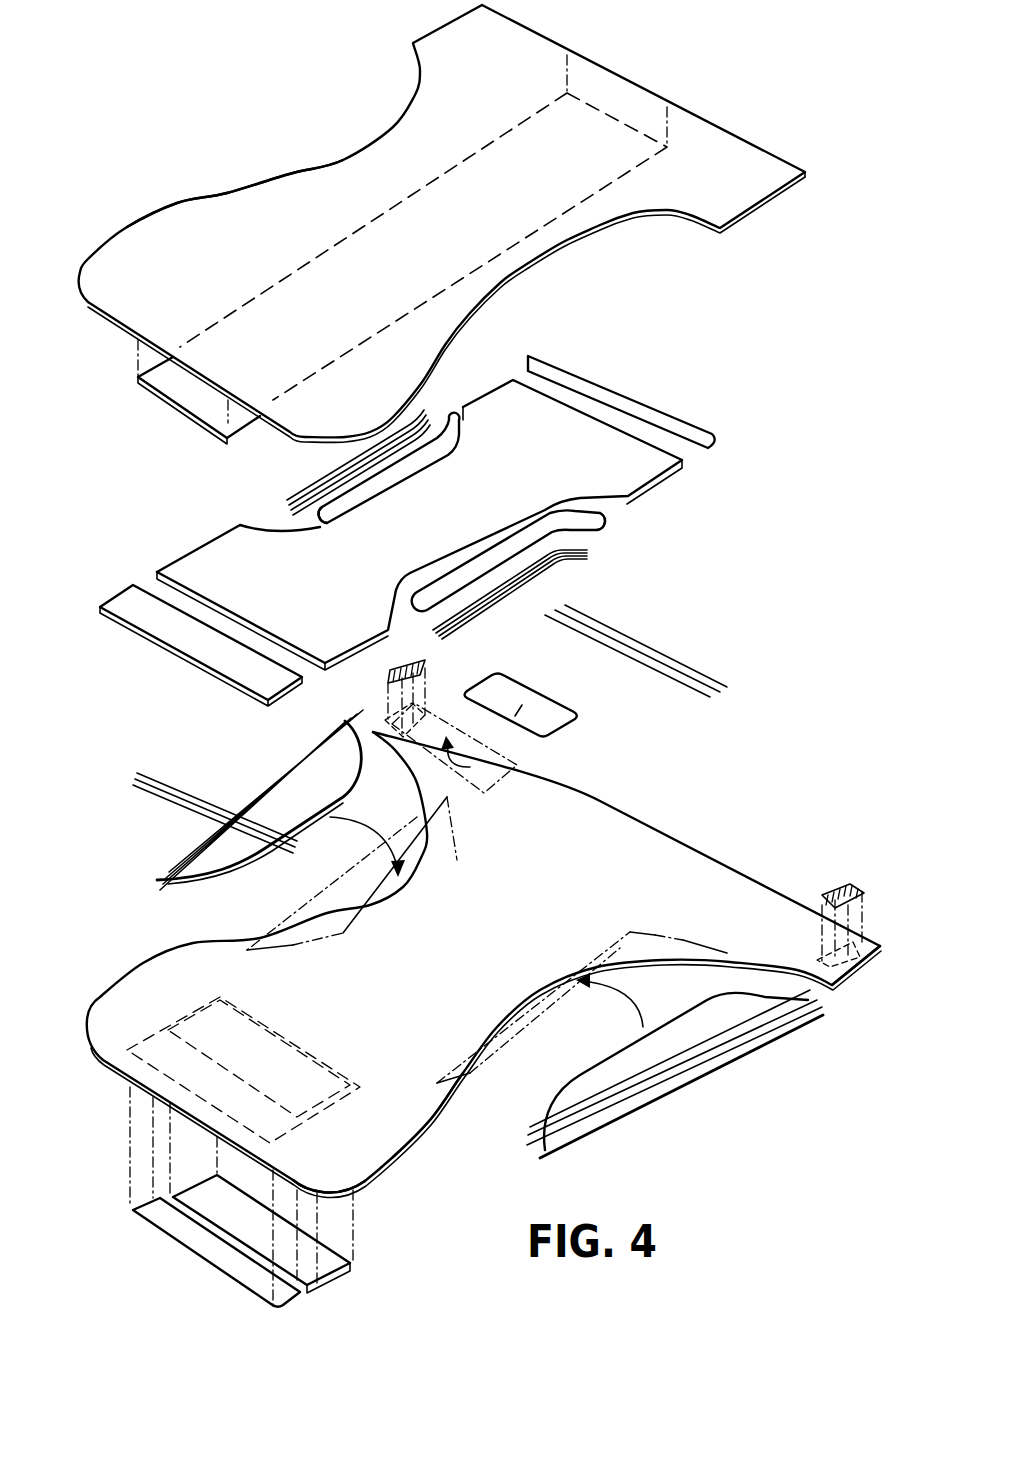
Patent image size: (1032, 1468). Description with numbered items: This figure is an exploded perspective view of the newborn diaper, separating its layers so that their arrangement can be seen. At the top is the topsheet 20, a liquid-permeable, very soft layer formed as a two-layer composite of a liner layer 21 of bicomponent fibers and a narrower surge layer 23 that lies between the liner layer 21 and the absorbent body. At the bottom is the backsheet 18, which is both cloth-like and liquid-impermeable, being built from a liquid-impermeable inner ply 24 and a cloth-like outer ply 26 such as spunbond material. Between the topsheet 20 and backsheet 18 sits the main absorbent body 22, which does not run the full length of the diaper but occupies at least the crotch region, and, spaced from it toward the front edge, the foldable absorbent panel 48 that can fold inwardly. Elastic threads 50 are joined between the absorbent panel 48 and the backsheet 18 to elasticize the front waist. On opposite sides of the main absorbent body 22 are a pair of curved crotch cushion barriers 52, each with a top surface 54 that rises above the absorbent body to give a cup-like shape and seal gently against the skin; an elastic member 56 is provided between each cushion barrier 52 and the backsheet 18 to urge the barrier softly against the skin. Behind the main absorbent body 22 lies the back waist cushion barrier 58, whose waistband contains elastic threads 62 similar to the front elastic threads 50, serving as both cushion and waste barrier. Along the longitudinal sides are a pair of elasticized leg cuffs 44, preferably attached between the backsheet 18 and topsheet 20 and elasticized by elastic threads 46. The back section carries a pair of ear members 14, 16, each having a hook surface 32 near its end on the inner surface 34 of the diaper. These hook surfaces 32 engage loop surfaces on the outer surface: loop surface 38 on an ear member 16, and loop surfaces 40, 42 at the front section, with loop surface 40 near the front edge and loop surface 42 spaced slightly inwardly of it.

The ear member 14 is at (866, 945).
The ear member 16 is at (435, 707).
The backsheet 18 is at (680, 812).
The topsheet 20 is at (735, 98).
The liner layer 21 is at (296, 188).
The main absorbent body 22 is at (572, 455).
The surge layer 23 is at (183, 392).
The inner ply 24 is at (393, 1140).
The outer ply 26 is at (387, 1170).
The hook surface 32 is at (390, 665).
The inner surface 34 is at (175, 223).
The loop surface 38 is at (580, 712).
The loop surface 40 is at (330, 1263).
The loop surface 42 is at (193, 1240).
The elasticized leg cuff 44 is at (337, 780).
The elastic threads 46 is at (293, 767).
The foldable absorbent panel 48 is at (123, 597).
The elastic threads 50 is at (175, 793).
The crotch cushion barrier 52 is at (348, 507).
The top surface 54 is at (428, 449).
The elastic member 56 is at (327, 484).
The back waist cushion barrier 58 is at (643, 410).
The elastic threads 62 is at (677, 668).